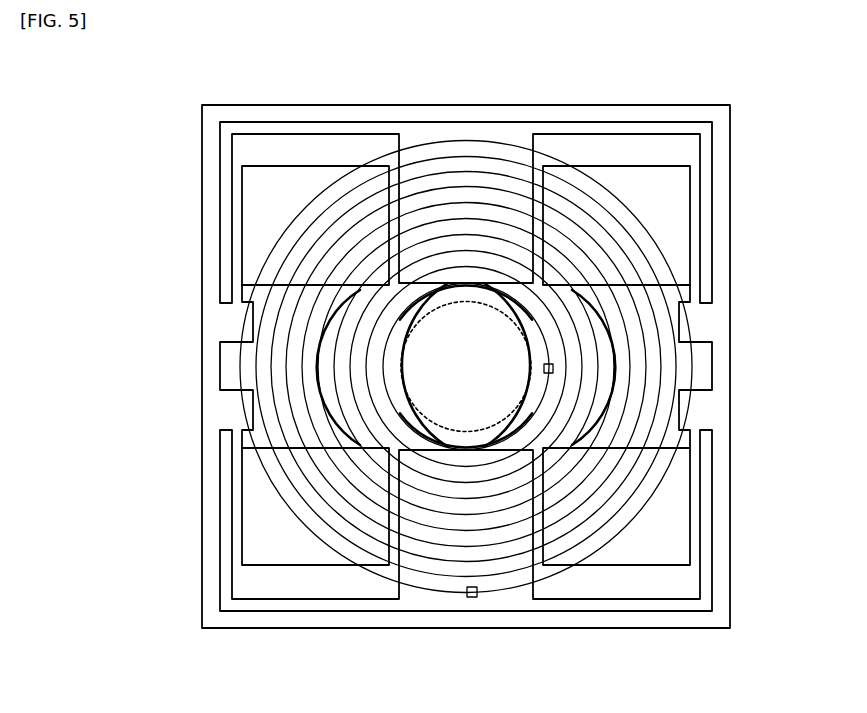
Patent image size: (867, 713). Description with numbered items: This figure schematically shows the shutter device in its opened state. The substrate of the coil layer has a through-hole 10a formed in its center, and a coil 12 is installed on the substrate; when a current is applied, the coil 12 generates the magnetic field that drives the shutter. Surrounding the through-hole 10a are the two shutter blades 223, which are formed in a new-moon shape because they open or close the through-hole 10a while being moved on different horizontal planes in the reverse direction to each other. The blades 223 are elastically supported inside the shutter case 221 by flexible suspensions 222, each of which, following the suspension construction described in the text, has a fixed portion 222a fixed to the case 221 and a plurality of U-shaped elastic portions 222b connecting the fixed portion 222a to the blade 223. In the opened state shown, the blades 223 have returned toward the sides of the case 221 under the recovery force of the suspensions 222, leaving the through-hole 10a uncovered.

The through-hole 10a is at (477, 300).
The coil 12 is at (640, 503).
The frame 221 is at (472, 617).
The yoke 222 is at (369, 365).
The yoke pole portion 222a is at (407, 366).
The elastic portions 222b is at (237, 200).
The shutter blades 223 is at (330, 376).